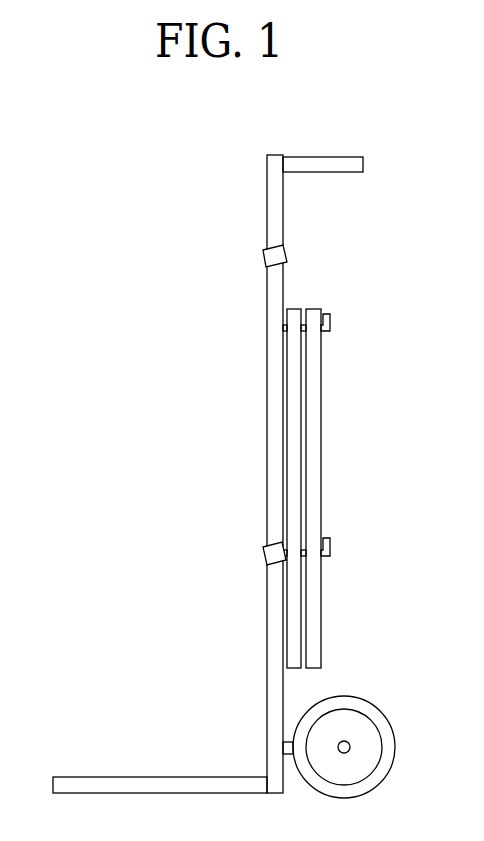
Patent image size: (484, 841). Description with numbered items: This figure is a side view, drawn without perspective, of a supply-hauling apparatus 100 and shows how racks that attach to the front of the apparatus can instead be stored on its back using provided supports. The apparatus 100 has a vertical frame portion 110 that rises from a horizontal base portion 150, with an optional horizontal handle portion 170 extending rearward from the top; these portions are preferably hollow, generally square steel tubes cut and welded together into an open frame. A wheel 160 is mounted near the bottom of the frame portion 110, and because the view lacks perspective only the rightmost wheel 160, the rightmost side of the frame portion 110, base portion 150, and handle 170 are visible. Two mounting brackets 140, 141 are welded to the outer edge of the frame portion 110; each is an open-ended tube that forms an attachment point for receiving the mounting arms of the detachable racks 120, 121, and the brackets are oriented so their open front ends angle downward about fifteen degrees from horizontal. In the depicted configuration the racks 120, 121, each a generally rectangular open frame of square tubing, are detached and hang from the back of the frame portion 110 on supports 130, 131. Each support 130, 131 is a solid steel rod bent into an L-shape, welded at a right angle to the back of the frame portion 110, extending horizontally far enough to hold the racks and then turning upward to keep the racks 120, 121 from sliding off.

The apparatus 100 is at (113, 195).
The vertical frame portion 110 is at (266, 222).
The detachable rack 120 is at (292, 309).
The detachable rack 121 is at (312, 309).
The support 130 is at (330, 323).
The support 131 is at (332, 549).
The mounting bracket 140 is at (263, 264).
The mounting bracket 141 is at (263, 556).
The horizontal base portion 150 is at (160, 777).
The wheel 160 is at (355, 697).
The horizontal handle portion 170 is at (312, 157).